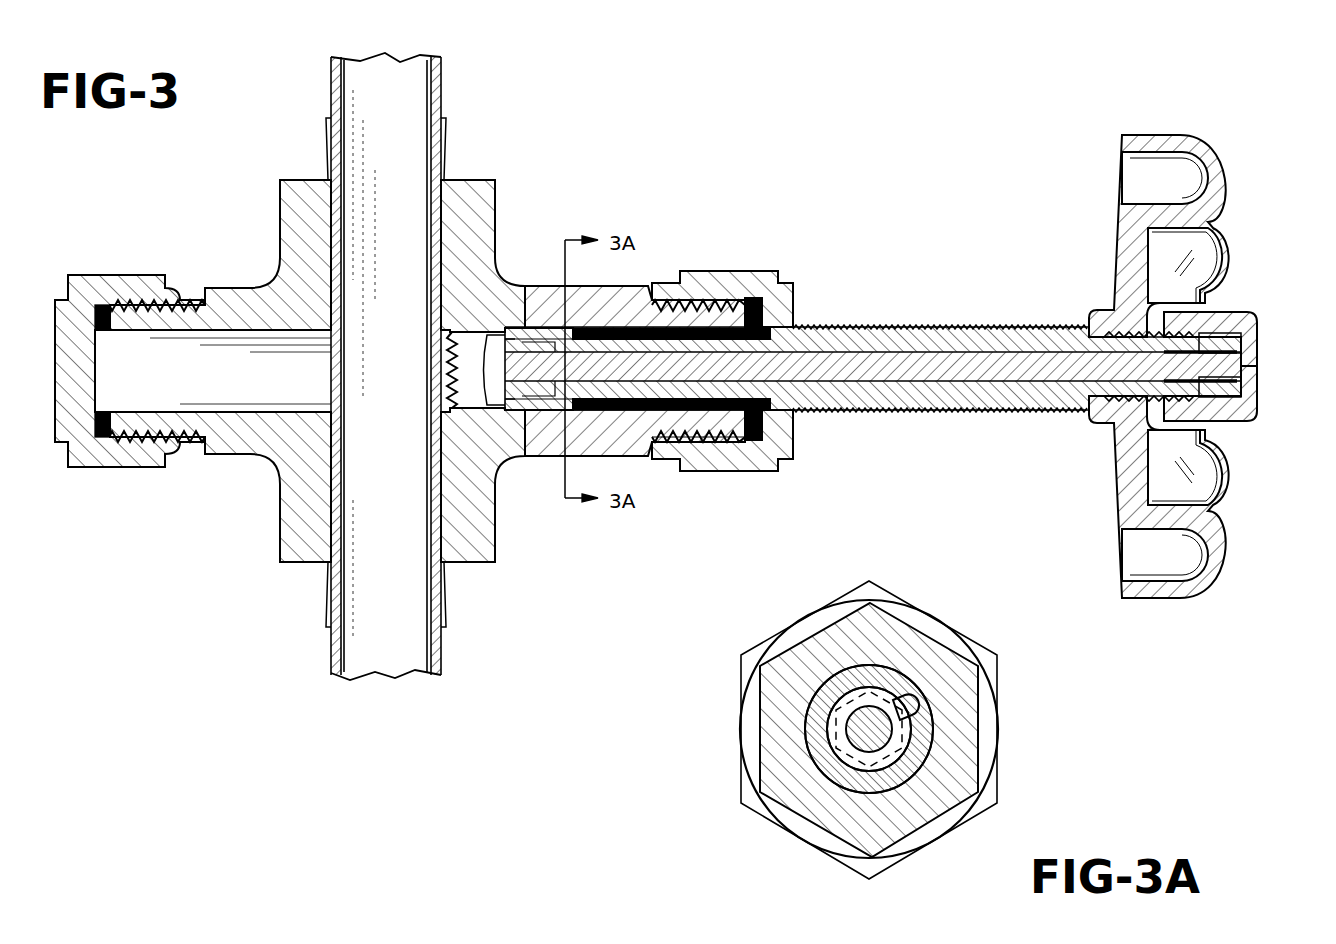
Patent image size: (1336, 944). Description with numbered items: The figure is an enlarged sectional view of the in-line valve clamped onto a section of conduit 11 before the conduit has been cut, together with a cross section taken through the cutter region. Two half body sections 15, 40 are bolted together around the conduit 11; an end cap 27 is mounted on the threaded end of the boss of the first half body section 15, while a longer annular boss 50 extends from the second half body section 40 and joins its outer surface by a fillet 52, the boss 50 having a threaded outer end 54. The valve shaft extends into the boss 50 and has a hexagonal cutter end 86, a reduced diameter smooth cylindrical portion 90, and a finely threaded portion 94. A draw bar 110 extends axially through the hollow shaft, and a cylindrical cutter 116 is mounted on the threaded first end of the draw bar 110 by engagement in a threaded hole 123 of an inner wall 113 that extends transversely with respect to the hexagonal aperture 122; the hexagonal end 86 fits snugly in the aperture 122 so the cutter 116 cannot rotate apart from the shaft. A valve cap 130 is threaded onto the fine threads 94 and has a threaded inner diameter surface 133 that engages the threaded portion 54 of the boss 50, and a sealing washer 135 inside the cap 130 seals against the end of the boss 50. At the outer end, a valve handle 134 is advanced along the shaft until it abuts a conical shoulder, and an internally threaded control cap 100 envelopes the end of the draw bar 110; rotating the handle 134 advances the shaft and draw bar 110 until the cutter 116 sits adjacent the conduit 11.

In FIG. 3, the conduit 11 is at (397, 645).
In FIG. 3, the half body section 15 is at (303, 183).
In FIG. 3, the end cap 27 is at (116, 470).
In FIG. 3, the half body section 40 is at (474, 192).
In FIG. 3, the boss 50 is at (625, 292).
In FIG. 3A, the boss 50 is at (895, 630).
In FIG. 3A, the fillet 52 is at (990, 726).
In FIG. 3, the threaded outer end 54 is at (700, 448).
In FIG. 3A, the hexagonal cutter end 86 is at (895, 757).
In FIG. 3A, the reduced diameter smooth cylindrical portion 90 is at (800, 655).
In FIG. 3, the finely threaded portion 94 is at (925, 329).
In FIG. 3, the control cap 100 is at (1256, 340).
In FIG. 3, the draw bar 110 is at (900, 370).
In FIG. 3A, the draw bar 110 is at (852, 735).
In FIG. 3, the inner wall 113 is at (512, 352).
In FIG. 3A, the cylindrical cutter 116 is at (905, 690).
In FIG. 3A, the hexagonal aperture 122 is at (907, 712).
In FIG. 3, the threaded hole 123 is at (515, 388).
In FIG. 3, the valve cap 130 is at (740, 272).
In FIG. 3A, the valve cap 130 is at (866, 597).
In FIG. 3, the threaded inner diameter surface 133 is at (705, 307).
In FIG. 3, the valve handle 134 is at (1213, 160).
In FIG. 3, the sealing washer 135 is at (758, 308).